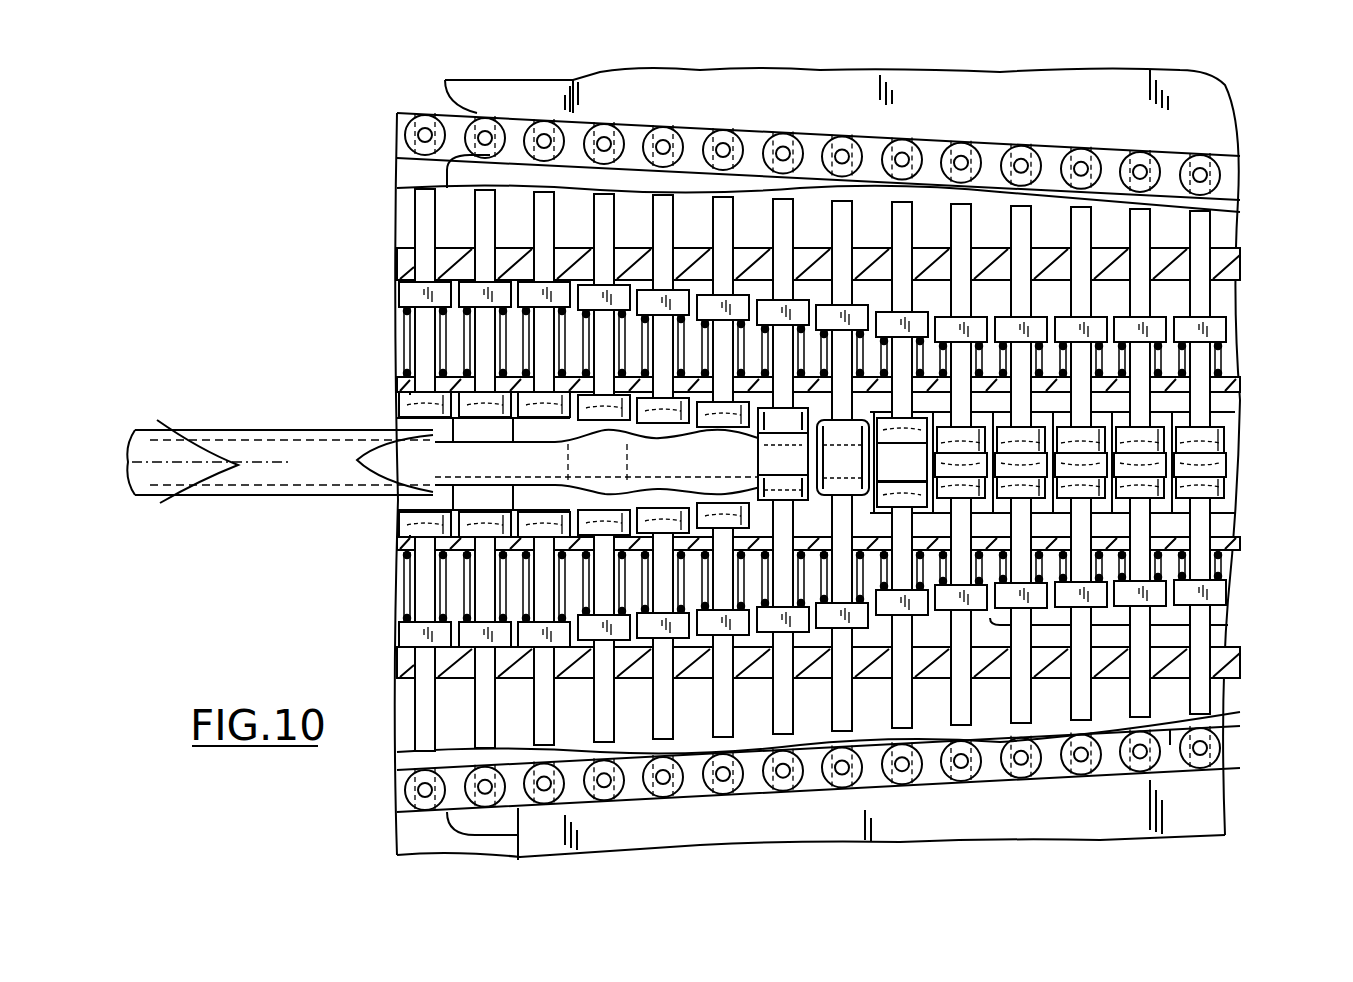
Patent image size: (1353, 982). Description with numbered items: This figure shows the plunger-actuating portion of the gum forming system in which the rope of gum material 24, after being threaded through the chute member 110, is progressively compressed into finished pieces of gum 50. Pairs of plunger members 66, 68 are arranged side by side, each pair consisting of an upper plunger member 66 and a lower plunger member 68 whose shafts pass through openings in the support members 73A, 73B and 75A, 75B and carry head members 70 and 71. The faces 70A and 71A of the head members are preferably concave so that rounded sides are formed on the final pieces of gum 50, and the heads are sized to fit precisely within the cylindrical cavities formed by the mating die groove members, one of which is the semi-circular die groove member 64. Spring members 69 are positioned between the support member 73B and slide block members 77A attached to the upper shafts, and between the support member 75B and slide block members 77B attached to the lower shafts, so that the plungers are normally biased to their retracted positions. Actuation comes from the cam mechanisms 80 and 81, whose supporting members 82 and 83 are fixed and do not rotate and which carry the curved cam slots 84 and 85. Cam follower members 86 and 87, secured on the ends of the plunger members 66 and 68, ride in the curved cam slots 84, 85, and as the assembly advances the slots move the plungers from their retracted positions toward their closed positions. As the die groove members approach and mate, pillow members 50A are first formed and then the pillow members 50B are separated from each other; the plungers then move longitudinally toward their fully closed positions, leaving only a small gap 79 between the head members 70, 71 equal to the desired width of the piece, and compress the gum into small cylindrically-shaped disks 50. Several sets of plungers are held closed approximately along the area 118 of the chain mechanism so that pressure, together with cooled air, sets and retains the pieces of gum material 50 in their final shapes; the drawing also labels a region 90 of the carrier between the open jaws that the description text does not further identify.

The rope of gum material 24 is at (163, 462).
The pieces of liquid-filled gum 50 is at (1195, 458).
The pillow members 50A is at (760, 450).
The pillow members 50B is at (922, 477).
The semi-circular die groove member 64 is at (400, 337).
The plunger member 66 is at (1200, 241).
The plunger member 68 is at (1205, 698).
The spring members 69 is at (1238, 347).
The head member 70 is at (413, 392).
The face 70A is at (418, 406).
The head member 71 is at (413, 528).
The face 71A is at (400, 511).
The support member 73A is at (1235, 267).
The support member 73B is at (1242, 388).
The support member 75A is at (1232, 540).
The support member 75B is at (1236, 650).
The slide block member 77A is at (1222, 327).
The slide block member 77B is at (1222, 598).
The gap 79 is at (1152, 462).
The cam mechanism 80 is at (1195, 120).
The cam mechanism 81 is at (1197, 800).
The supporting member 82 is at (752, 88).
The supporting member 83 is at (1073, 823).
The curved cam slot 84 is at (511, 117).
The curved cam slot 85 is at (518, 845).
The cam follower member 86 is at (405, 133).
The cam follower member 87 is at (405, 795).
The carrier 90 is at (457, 498).
The chute member 110 is at (262, 492).
The area 118 is at (1185, 622).